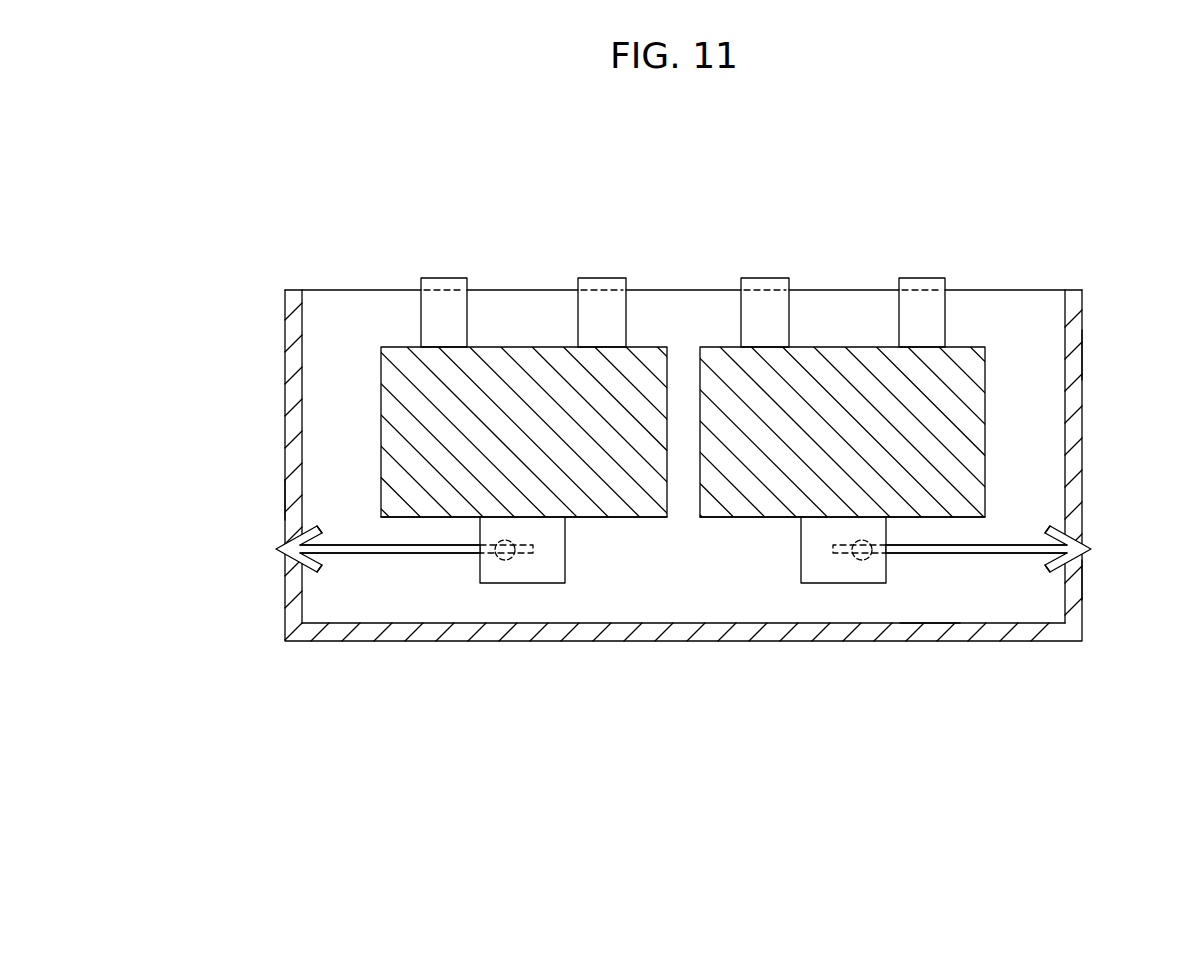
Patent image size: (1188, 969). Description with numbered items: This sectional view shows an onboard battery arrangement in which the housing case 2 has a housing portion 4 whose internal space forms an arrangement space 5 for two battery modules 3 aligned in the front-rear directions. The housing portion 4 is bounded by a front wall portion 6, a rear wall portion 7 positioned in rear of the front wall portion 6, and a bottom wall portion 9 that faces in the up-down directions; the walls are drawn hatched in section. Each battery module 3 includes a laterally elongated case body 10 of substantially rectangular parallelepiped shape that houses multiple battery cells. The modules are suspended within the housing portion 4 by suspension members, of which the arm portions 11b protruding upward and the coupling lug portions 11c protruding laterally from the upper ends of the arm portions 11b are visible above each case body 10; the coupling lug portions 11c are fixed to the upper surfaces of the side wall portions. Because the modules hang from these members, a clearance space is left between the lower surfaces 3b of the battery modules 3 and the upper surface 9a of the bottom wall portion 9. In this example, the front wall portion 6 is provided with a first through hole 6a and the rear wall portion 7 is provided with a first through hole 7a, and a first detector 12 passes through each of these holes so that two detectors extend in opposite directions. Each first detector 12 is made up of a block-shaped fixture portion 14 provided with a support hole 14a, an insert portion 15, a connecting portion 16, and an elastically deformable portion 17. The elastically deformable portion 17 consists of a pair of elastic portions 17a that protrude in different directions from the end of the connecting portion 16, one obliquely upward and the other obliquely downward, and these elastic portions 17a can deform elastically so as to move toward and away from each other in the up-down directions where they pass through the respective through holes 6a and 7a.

The housing case 2 is at (1075, 327).
The battery module 3 is at (679, 430).
The lower surface of battery module 3b is at (625, 517).
The housing portion 4 is at (1070, 358).
The arrangement space 5 is at (1013, 340).
The front wall portion 6 is at (295, 361).
The first through hole 6a is at (284, 560).
The rear wall portion 7 is at (1077, 386).
The first through hole 7a is at (1083, 562).
The bottom wall portion 9 is at (741, 641).
The upper surface of bottom wall portion 9a is at (933, 625).
The case body 10 is at (553, 356).
The arm portion 11b is at (697, 259).
The coupling lug portion 11c is at (437, 278).
The first detector 12 is at (684, 573).
The fixture portion 14 is at (671, 623).
The support hole 14a is at (495, 558).
The insert portion 15 is at (510, 560).
The connecting portion 16 is at (388, 556).
The elastically deformable portion 17 is at (684, 602).
The elastic portion 17a is at (317, 527).